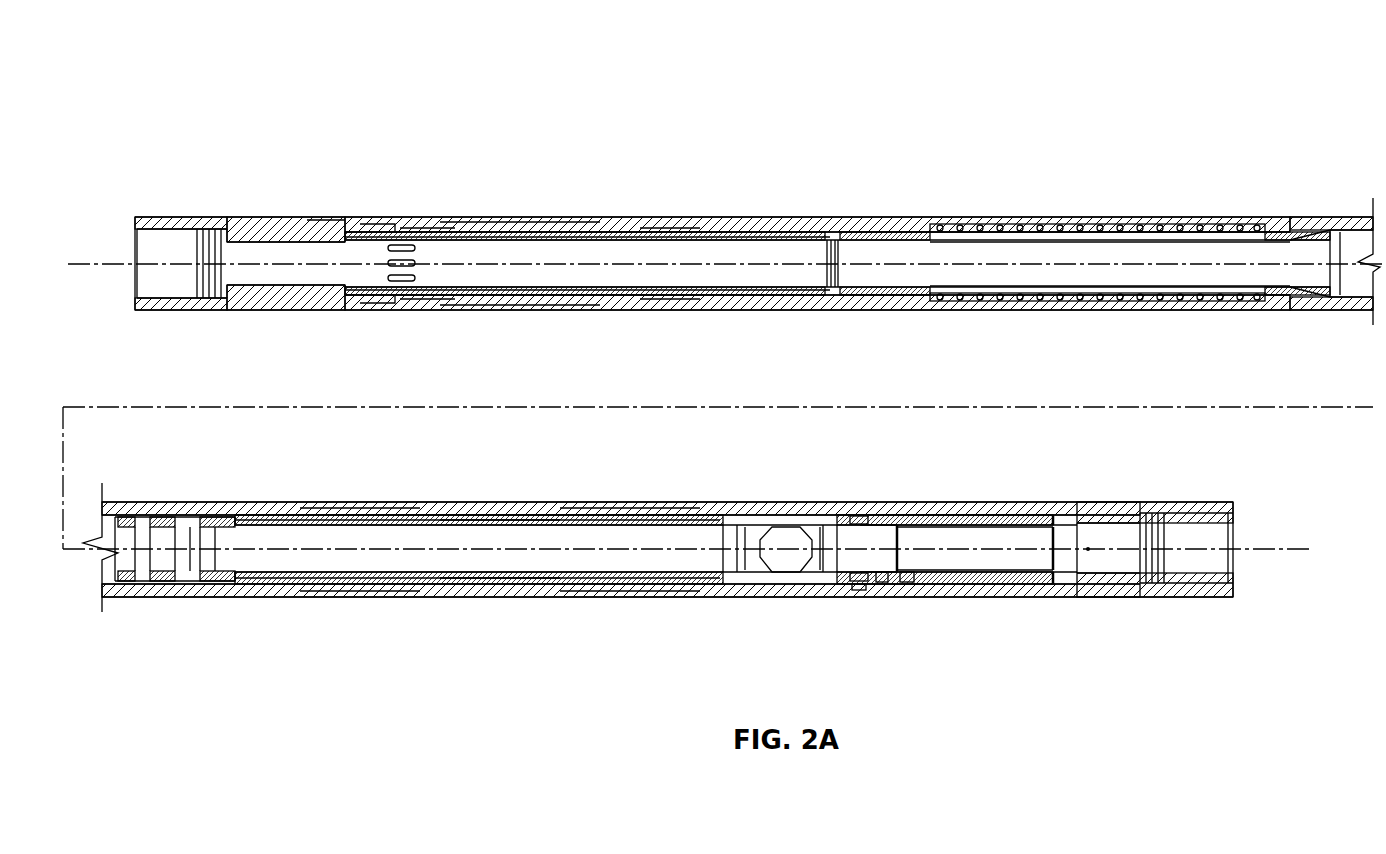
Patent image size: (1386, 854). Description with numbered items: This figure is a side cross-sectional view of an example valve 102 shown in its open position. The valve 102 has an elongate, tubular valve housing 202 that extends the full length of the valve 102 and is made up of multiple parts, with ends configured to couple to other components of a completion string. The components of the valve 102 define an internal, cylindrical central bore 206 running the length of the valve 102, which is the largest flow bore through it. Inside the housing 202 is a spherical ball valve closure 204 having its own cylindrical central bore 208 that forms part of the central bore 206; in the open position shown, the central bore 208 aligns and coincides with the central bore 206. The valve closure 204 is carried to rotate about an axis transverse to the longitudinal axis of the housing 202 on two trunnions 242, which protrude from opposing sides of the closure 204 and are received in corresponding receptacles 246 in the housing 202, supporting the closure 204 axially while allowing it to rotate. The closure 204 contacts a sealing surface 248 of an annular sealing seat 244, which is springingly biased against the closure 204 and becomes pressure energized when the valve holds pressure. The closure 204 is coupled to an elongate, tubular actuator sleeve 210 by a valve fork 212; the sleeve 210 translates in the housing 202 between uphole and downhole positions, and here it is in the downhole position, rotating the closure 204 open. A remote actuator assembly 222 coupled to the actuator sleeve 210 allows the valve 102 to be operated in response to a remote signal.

The valve 102 is at (203, 98).
The valve housing 202 is at (833, 228).
The remote actuator assembly 222 is at (980, 225).
The central bore 206 is at (1090, 250).
The actuator sleeve 210 is at (235, 525).
The valve fork 212 is at (758, 518).
The trunnions 242 is at (860, 518).
The central bore of valve closure 208 is at (867, 523).
The ball valve closure 204 is at (888, 523).
The receptacles 246 is at (858, 588).
The sealing surface 248 is at (882, 573).
The annular sealing seat 244 is at (907, 573).